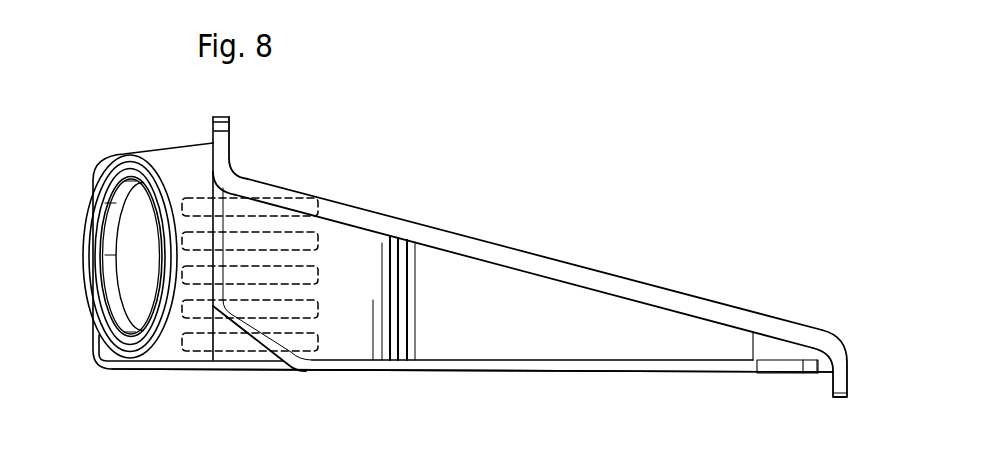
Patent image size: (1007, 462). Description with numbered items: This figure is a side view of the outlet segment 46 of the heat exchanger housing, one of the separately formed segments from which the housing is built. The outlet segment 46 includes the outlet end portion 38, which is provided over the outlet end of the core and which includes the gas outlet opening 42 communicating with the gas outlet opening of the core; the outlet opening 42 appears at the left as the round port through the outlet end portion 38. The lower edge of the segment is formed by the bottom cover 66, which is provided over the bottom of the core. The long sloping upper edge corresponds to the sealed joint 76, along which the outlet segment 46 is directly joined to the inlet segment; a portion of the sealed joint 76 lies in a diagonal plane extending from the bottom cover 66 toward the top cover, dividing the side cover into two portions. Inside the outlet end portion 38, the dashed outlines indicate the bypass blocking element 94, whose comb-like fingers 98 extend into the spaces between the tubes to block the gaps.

The outlet end portion 38 is at (94, 350).
The gas outlet opening 42 is at (128, 232).
The outlet segment 46 is at (481, 236).
The bottom cover 66 is at (503, 374).
The sealed joint 76 is at (690, 300).
The bypass blocking element 94 is at (266, 239).
The fingers 98 is at (289, 199).